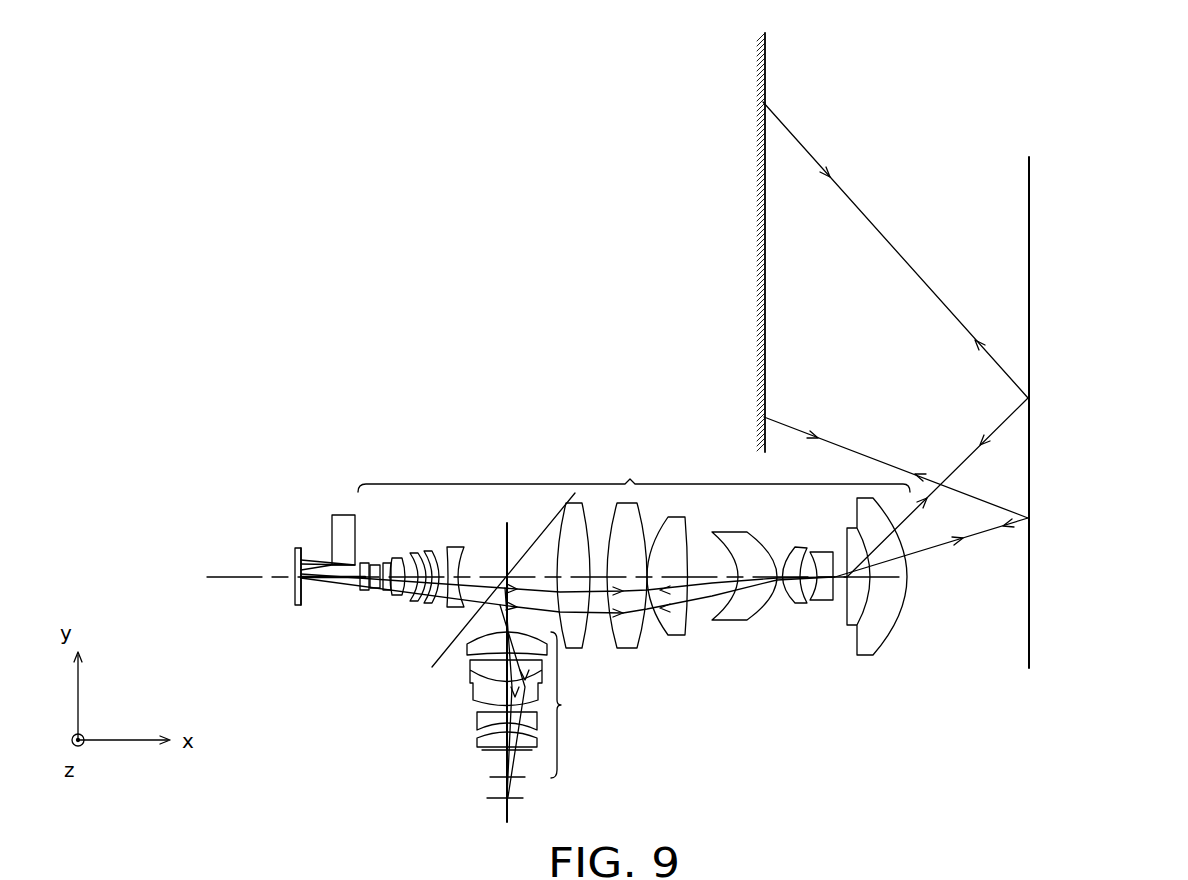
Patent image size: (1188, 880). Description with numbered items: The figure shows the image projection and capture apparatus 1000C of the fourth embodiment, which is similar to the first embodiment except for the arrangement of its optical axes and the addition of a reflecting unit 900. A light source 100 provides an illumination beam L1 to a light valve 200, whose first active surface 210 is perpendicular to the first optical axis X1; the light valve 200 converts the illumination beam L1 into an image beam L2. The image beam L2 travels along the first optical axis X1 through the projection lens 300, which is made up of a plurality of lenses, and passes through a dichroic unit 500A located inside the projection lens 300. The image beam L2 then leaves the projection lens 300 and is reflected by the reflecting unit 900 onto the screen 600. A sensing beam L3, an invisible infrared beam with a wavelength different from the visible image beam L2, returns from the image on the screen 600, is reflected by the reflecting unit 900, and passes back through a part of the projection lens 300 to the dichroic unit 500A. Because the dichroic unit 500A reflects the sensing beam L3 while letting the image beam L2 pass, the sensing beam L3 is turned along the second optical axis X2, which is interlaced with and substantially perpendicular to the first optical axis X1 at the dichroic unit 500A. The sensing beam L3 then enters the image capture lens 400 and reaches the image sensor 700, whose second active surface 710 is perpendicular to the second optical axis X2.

The light source 100 is at (342, 522).
The light valve 200 is at (296, 593).
The first active surface 210 is at (306, 593).
The projection lens 300 is at (634, 551).
The image capture lens 400 is at (533, 692).
The dichroic unit 500A is at (437, 657).
The screen 600 is at (766, 68).
The image sensor 700 is at (505, 800).
The second active surface 710 is at (497, 794).
The reflecting unit 900 is at (1031, 656).
The image projection and capture apparatus 1000C is at (1166, 803).
The illumination beam L1 is at (320, 557).
The image beam L2 is at (340, 579).
The sensing beam L3 is at (807, 137).
The first optical axis X1 is at (221, 575).
The second optical axis X2 is at (515, 806).